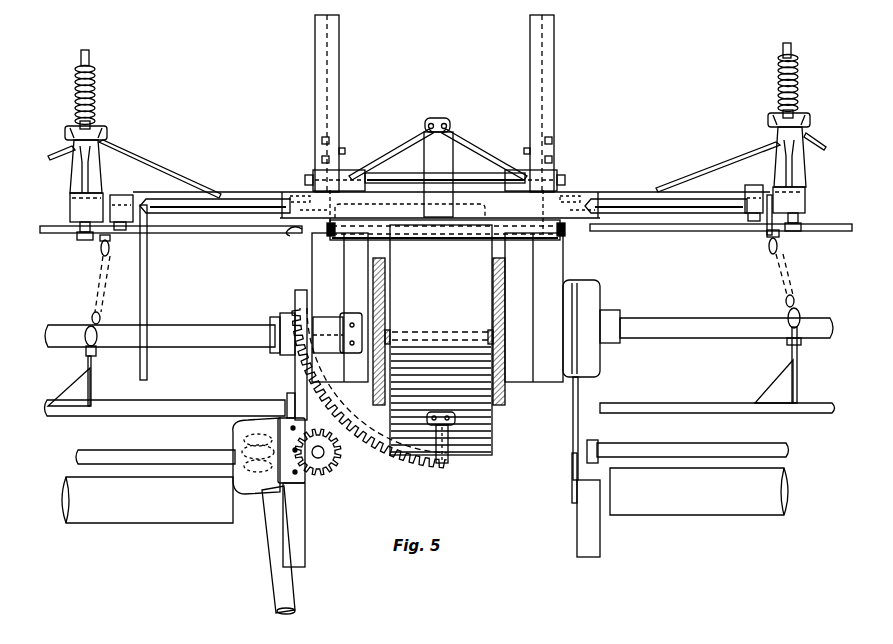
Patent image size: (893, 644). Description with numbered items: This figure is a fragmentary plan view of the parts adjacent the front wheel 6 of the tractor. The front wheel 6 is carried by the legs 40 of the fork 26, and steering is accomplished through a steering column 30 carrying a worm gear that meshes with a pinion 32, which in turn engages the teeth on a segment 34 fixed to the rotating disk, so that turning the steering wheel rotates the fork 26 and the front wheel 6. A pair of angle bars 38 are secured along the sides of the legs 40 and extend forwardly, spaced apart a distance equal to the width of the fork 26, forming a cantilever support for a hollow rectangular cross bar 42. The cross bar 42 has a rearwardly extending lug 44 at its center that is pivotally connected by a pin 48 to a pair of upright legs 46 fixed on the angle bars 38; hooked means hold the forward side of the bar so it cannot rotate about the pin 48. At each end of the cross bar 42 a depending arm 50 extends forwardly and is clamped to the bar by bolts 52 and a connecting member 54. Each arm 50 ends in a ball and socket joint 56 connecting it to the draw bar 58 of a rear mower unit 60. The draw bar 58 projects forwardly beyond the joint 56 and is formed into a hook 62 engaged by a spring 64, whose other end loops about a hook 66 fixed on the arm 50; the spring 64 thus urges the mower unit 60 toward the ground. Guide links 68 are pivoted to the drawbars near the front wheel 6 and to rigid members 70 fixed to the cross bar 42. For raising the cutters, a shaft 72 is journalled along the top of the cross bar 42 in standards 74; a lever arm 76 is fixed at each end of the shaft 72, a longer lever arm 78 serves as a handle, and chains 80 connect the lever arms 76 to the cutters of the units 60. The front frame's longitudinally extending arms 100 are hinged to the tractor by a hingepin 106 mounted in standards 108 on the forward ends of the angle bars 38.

The front wheel 6 is at (476, 424).
The fork 26 is at (497, 296).
The steering column 30 is at (282, 590).
The pinion 32 is at (330, 478).
The segment 34 is at (407, 465).
The angle bars 38 is at (352, 268).
The legs 40 is at (380, 403).
The cross bar 42 is at (602, 190).
The lug 44 is at (458, 241).
The upright legs 46 is at (364, 235).
The pin 48 is at (308, 230).
The depending arm 50 is at (77, 173).
The bolts 52 is at (71, 213).
The connecting member 54 is at (81, 241).
The ball and socket joint 56 is at (104, 128).
The draw bar 58 is at (148, 168).
The rear mower unit 60 is at (126, 528).
The hook 62 is at (90, 60).
The spring 64 is at (96, 92).
The hook 66 is at (82, 122).
The guide links 68 is at (394, 148).
The rigid member 70 is at (437, 117).
The shaft 72 is at (229, 206).
The standards 74 is at (117, 196).
The lever arm 76 is at (109, 256).
The lever arm 78 is at (148, 293).
The chains 80 is at (85, 307).
The arms 100 is at (333, 53).
The hingepin 106 is at (474, 173).
The standards 108 is at (355, 172).